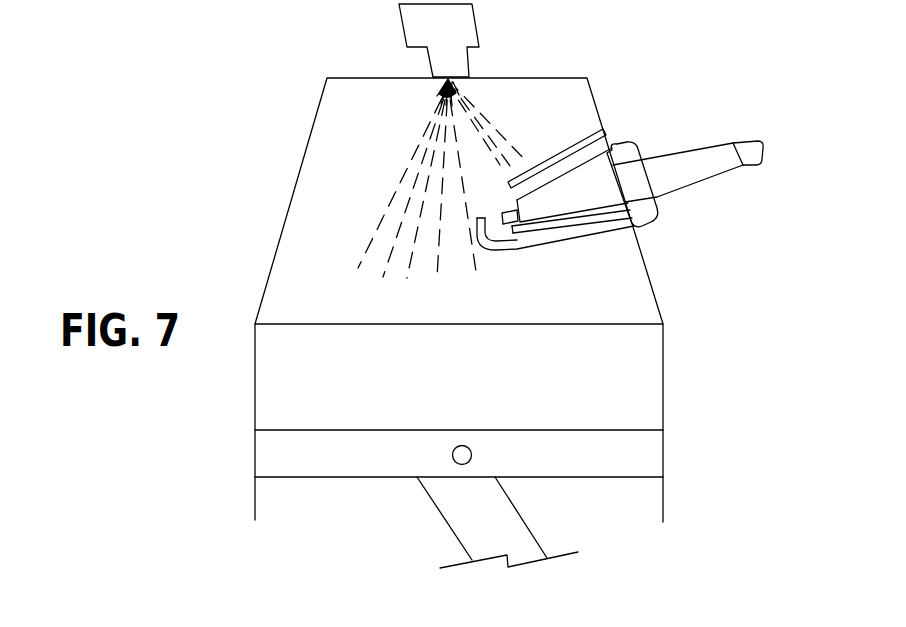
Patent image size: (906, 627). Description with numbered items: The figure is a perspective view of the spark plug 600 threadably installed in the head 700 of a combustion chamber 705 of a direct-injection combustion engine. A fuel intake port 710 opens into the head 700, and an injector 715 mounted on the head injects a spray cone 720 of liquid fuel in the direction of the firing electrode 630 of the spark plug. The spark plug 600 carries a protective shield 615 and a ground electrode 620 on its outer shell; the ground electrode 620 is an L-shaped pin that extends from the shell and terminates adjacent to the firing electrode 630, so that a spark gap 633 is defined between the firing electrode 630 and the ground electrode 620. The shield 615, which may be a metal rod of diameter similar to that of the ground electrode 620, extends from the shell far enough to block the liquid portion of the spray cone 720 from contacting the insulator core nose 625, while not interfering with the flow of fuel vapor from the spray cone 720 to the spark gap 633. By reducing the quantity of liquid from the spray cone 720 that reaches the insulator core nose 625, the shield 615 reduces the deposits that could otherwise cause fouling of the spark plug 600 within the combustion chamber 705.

The spark plug 600 is at (690, 150).
The protective shield 615 is at (567, 137).
The ground electrode 620 is at (592, 230).
The insulator core nose 625 is at (597, 205).
The firing electrode 630 is at (514, 226).
The spark gap 633 is at (497, 216).
The head 700 is at (297, 172).
The combustion chamber 705 is at (663, 375).
The fuel intake port 710 is at (440, 81).
The injector 715 is at (400, 22).
The spray cone 720 is at (490, 115).